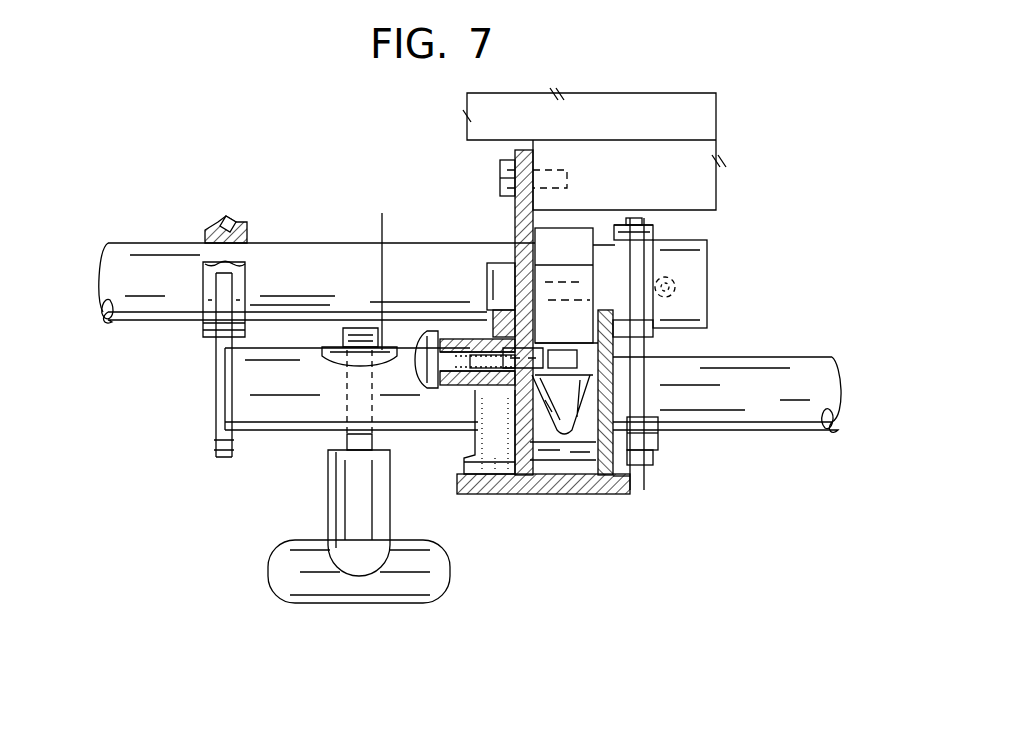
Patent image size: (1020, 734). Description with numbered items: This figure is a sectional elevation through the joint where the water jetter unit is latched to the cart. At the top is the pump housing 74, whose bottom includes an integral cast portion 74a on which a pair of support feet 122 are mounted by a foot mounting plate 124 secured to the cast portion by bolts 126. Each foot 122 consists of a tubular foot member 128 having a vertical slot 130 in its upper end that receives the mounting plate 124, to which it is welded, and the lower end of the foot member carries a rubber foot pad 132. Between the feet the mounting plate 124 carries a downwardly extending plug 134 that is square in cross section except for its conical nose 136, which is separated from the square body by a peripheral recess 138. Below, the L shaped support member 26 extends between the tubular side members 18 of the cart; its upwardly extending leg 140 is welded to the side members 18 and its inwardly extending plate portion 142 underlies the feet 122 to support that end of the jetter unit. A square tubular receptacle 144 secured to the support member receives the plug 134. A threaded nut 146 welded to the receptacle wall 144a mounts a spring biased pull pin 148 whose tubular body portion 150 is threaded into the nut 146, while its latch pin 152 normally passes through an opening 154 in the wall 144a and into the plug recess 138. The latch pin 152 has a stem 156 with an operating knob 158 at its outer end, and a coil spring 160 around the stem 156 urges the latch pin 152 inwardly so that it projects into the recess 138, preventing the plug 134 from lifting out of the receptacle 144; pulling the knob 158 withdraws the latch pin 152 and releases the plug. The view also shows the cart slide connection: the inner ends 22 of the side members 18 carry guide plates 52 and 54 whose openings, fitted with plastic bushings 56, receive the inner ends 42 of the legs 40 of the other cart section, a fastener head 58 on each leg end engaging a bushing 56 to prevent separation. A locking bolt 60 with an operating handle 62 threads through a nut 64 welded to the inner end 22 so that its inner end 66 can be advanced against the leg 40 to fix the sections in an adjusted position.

The tubular side member 18 is at (782, 438).
The inner end 22 is at (273, 420).
The L shaped support member 26 is at (620, 497).
The leg 40 is at (136, 240).
The inner end 42 is at (702, 267).
The support and guide plate 52 is at (220, 402).
The support and guide plate 54 is at (642, 455).
The bushing 56 is at (212, 233).
The fastener head 58 is at (676, 290).
The locking bolt 60 is at (347, 443).
The operating handle 62 is at (328, 592).
The nut 64 is at (377, 265).
The inner end 66 is at (352, 327).
The pump housing 74 is at (676, 98).
The integral cast portion 74a is at (585, 158).
The support foot 122 is at (493, 466).
The foot mounting plate 124 is at (522, 150).
The bolt 126 is at (502, 178).
The tubular foot member 128 is at (486, 264).
The vertical slot 130 is at (515, 250).
The rubber foot pad 132 is at (508, 494).
The plug 134 is at (585, 226).
The nose 136 is at (627, 493).
The peripheral recess 138 is at (593, 348).
The upwardly extending leg 140 is at (658, 428).
The plate portion 142 is at (468, 480).
The square tubular receptacle 144 is at (632, 467).
The receptacle wall 144a is at (548, 392).
The threaded nut 146 is at (491, 312).
The spring biased pull pin 148 is at (465, 390).
The tubular body portion 150 is at (467, 338).
The latch pin 152 is at (540, 345).
The opening 154 is at (540, 445).
The stem 156 is at (422, 382).
The operating knob 158 is at (415, 358).
The coil spring 160 is at (487, 338).